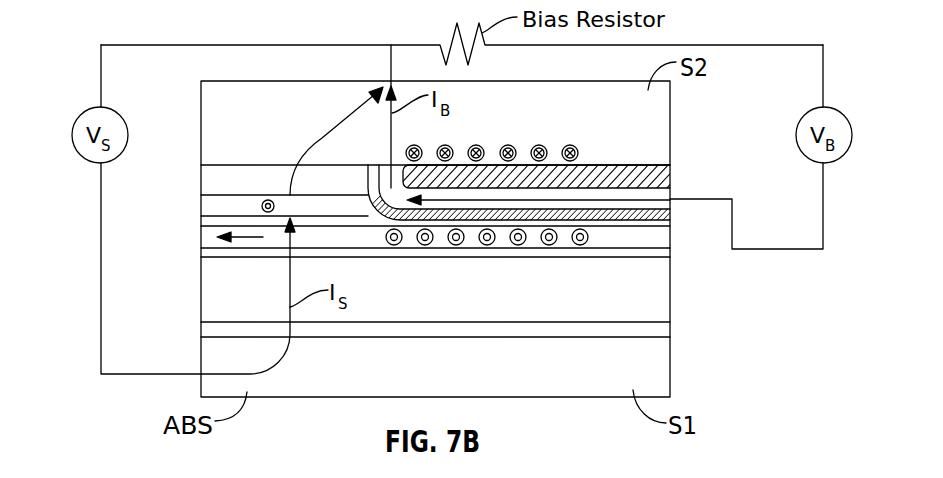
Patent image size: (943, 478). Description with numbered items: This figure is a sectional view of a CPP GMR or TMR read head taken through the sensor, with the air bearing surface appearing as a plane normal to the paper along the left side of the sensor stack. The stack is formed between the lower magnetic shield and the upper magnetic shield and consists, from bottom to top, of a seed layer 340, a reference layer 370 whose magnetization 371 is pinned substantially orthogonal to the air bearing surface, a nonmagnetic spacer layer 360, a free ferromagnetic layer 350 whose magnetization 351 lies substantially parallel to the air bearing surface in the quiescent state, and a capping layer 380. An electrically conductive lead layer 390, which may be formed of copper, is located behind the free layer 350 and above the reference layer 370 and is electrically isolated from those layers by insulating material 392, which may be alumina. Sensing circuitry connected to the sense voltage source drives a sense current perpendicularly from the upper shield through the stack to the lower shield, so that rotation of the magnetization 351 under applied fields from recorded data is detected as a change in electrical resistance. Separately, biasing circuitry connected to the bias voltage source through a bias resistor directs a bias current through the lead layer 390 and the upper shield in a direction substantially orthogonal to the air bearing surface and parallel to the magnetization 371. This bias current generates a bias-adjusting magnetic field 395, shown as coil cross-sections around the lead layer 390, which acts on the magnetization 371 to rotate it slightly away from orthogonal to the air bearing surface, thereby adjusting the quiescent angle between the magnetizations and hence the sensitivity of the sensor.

The seed layer 340 is at (207, 333).
The free ferromagnetic layer 350 is at (207, 196).
The magnetization of free layer 351 is at (266, 199).
The nonmagnetic spacer layer 360 is at (207, 217).
The reference layer 370 is at (207, 242).
The magnetization of reference layer 371 is at (253, 238).
The capping layer 380 is at (207, 172).
The electrically conductive lead layer 390 is at (472, 192).
The insulating material 392 is at (665, 180).
The bias-adjusting magnetic field 395 is at (542, 146).